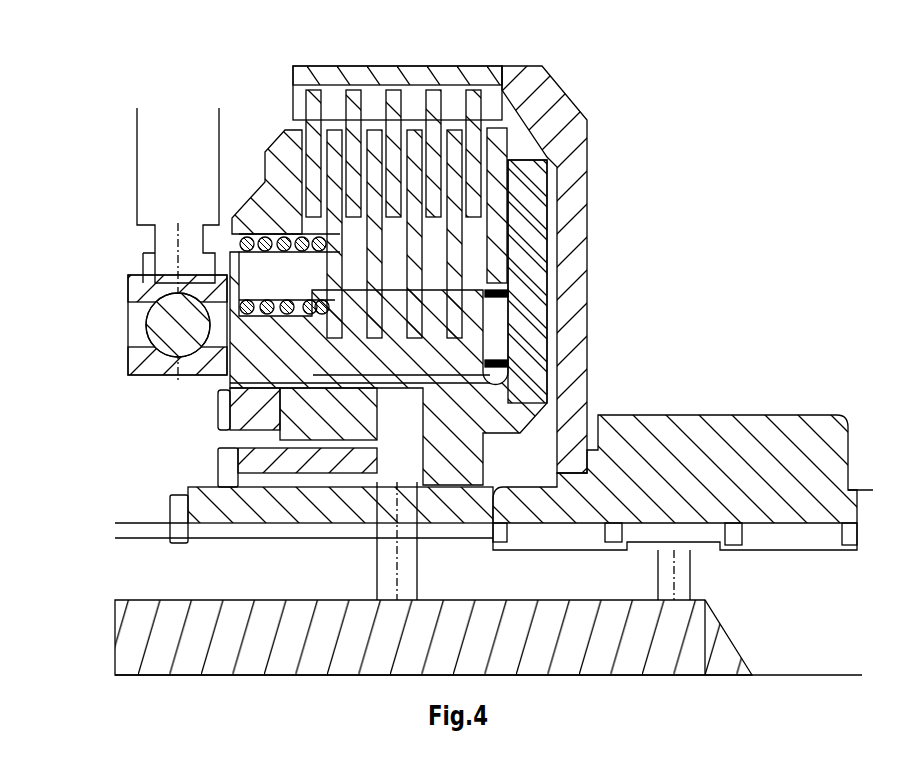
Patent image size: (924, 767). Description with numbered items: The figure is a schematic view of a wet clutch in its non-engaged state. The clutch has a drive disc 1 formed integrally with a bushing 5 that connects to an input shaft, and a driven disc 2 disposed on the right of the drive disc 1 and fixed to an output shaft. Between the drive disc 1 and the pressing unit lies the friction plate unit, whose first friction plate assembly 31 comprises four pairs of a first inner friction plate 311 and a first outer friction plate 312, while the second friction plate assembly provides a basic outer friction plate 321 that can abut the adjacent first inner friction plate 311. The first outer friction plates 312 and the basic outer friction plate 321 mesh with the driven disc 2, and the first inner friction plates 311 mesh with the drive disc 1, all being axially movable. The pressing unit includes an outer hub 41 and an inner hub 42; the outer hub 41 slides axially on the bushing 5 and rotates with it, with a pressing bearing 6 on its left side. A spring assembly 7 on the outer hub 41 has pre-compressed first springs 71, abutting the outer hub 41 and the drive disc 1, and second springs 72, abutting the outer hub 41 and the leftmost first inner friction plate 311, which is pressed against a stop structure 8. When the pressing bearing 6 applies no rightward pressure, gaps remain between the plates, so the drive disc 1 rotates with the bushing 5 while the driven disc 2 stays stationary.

The drive disc 1 is at (525, 272).
The driven disc 2 is at (565, 222).
The first friction plate assembly 31 is at (485, 189).
The first inner friction plate 311 is at (334, 215).
The first outer friction plate 312 is at (313, 112).
The basic outer friction plate 321 is at (317, 112).
The outer hub 41 is at (190, 378).
The inner hub 42 is at (290, 450).
The bushing 5 is at (290, 502).
The pressing bearing 6 is at (142, 308).
The spring assembly 7 is at (578, 348).
The first spring 71 is at (500, 372).
The second spring 72 is at (395, 322).
The stop structure 8 is at (322, 278).